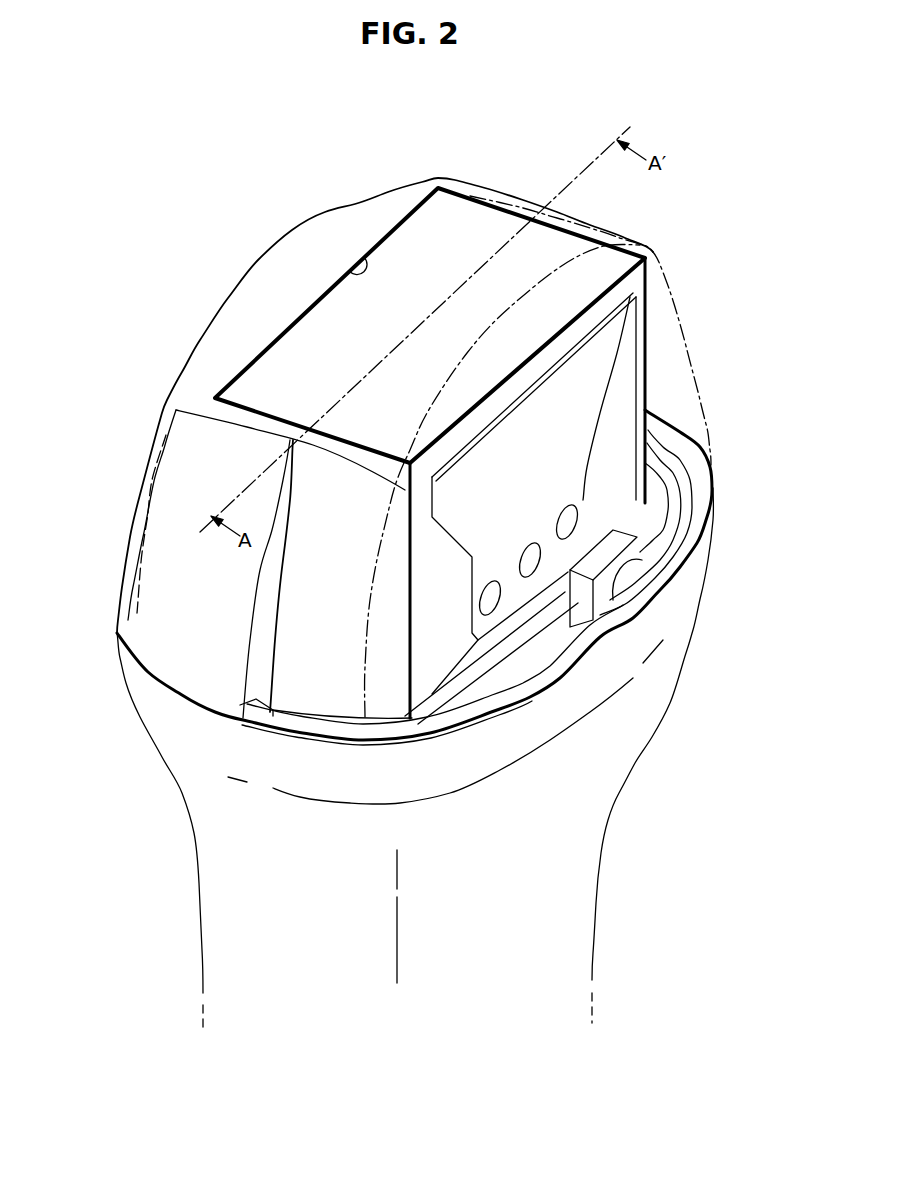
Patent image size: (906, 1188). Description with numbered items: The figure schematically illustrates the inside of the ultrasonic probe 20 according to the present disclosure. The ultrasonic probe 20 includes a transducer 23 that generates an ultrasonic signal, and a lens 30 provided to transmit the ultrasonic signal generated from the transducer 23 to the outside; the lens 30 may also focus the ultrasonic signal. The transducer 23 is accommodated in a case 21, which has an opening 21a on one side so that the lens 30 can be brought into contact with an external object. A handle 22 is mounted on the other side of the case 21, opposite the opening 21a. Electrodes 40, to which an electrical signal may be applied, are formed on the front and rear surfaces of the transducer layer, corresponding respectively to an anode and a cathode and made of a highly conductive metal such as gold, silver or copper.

The ultrasonic probe 20 is at (171, 192).
The case 21 is at (118, 607).
The opening 21a is at (360, 256).
The handle 22 is at (200, 920).
The transducer 23 is at (647, 390).
The lens 30 is at (457, 220).
The electrodes 40 is at (578, 478).